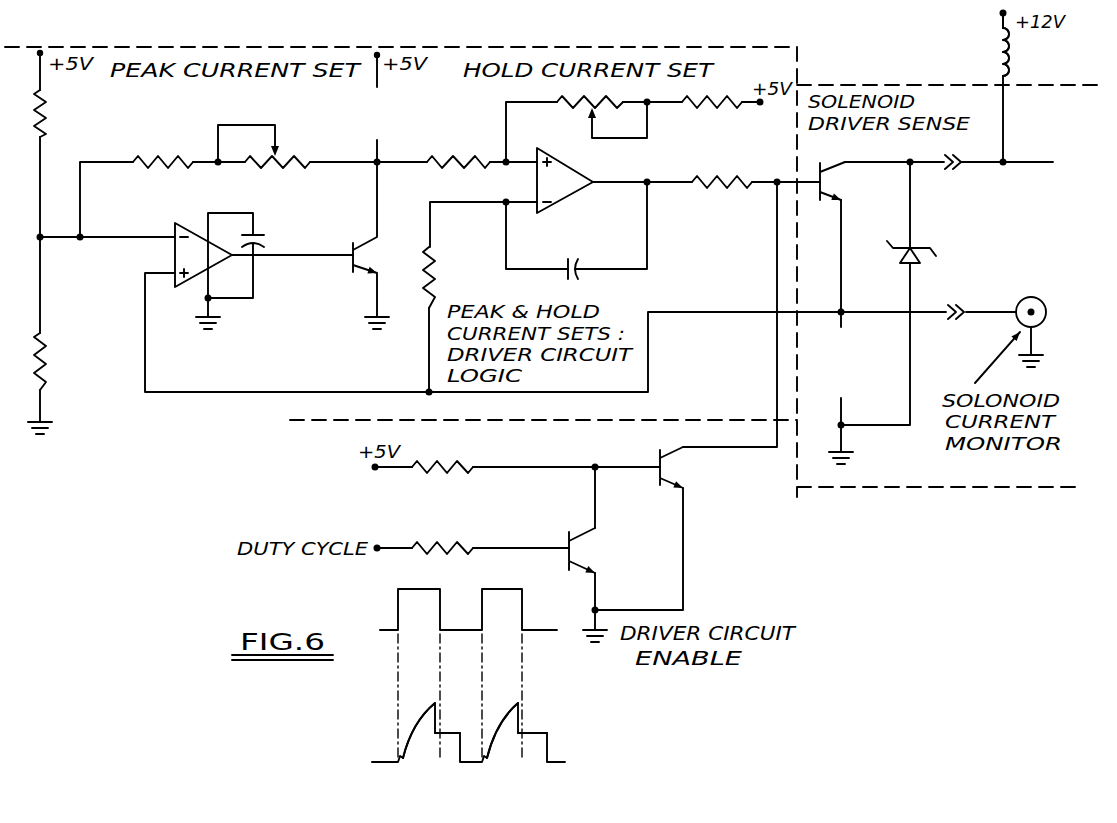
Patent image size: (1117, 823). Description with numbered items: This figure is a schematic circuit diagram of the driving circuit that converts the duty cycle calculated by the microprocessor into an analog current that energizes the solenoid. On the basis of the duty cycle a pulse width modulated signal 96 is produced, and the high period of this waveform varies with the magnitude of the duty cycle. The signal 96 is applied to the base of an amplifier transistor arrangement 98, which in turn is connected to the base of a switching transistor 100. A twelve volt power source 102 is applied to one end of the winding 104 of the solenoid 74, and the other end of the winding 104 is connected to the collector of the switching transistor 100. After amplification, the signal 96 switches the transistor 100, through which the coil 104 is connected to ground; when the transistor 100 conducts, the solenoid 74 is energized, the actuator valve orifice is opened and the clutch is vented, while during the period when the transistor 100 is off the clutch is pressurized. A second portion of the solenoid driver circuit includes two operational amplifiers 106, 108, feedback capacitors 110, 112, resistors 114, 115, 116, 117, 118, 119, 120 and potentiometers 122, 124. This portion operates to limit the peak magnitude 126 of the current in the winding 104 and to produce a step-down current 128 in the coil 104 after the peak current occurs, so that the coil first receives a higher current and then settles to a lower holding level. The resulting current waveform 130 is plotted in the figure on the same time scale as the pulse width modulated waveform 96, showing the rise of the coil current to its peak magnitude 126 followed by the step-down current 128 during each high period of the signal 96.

The solenoid 74 is at (1030, 64).
The pulse width modulated signal 96 is at (398, 612).
The amplifier transistor arrangement 98 is at (581, 526).
The switching transistor 100 is at (826, 168).
The 12 volt power source 102 is at (1000, 14).
The winding 104 is at (997, 55).
The operational amplifier 106 is at (183, 284).
The operational amplifier 108 is at (556, 201).
The feedback capacitor 110 is at (262, 233).
The feedback capacitor 112 is at (581, 276).
The resistor 114 is at (46, 355).
The resistor 115 is at (46, 107).
The resistor 116 is at (152, 153).
The resistor 117 is at (447, 152).
The resistor 118 is at (434, 273).
The resistor 119 is at (722, 194).
The resistor 120 is at (708, 108).
The potentiometer 122 is at (300, 155).
The potentiometer 124 is at (574, 109).
The peak magnitude 126 is at (435, 702).
The step-down current 128 is at (448, 732).
The current waveform 130 is at (388, 760).